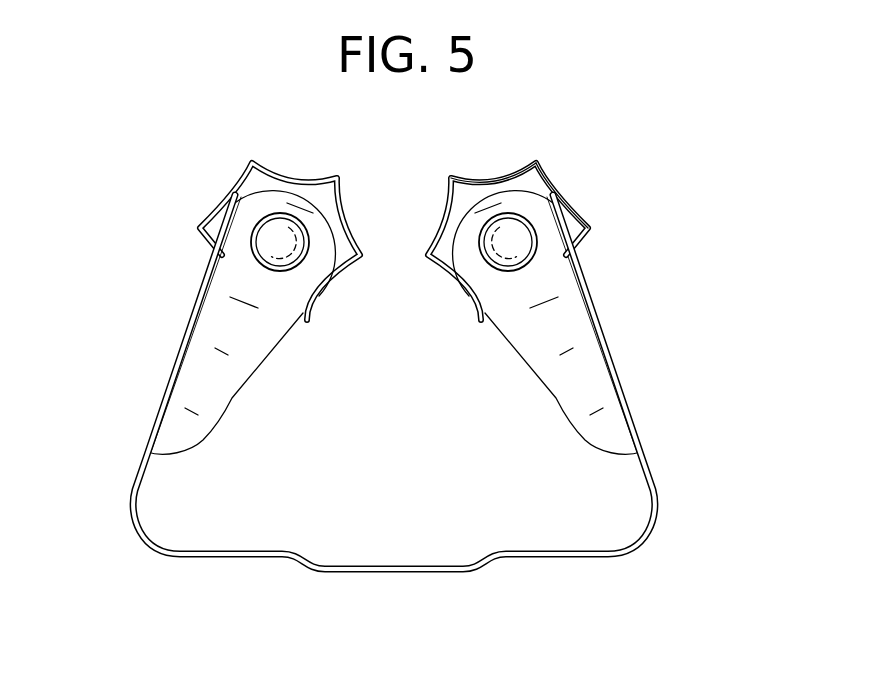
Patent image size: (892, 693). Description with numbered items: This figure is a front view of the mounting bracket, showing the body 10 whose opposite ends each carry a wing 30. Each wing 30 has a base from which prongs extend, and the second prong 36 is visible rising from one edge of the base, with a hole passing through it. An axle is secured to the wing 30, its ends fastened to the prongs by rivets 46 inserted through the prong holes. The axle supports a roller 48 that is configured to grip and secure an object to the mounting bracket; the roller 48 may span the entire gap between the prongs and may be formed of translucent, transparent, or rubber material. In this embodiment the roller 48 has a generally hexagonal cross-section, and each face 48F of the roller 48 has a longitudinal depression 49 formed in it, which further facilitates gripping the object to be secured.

The body 10 is at (440, 372).
The wing 30 is at (670, 458).
The second prong 36 is at (584, 350).
The rivets 46 is at (281, 243).
The roller 48 is at (448, 205).
The longitudinal depression 49 is at (478, 177).
The face 48F is at (513, 172).